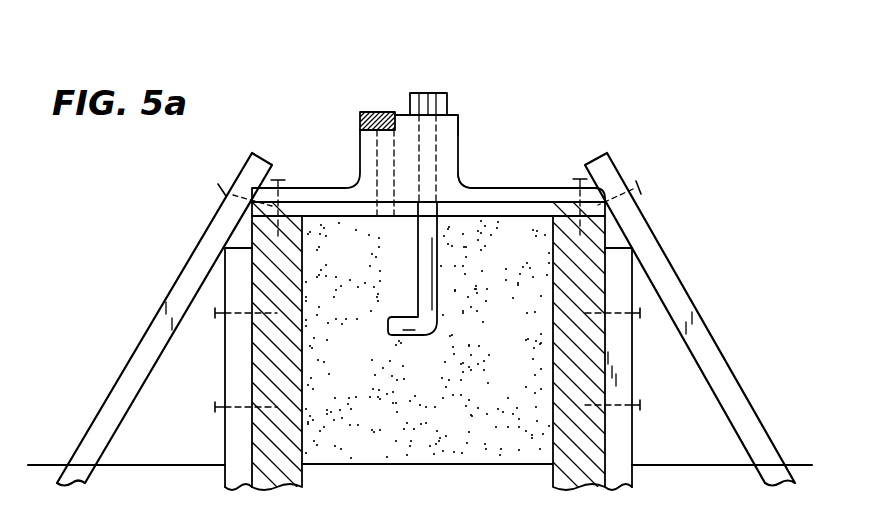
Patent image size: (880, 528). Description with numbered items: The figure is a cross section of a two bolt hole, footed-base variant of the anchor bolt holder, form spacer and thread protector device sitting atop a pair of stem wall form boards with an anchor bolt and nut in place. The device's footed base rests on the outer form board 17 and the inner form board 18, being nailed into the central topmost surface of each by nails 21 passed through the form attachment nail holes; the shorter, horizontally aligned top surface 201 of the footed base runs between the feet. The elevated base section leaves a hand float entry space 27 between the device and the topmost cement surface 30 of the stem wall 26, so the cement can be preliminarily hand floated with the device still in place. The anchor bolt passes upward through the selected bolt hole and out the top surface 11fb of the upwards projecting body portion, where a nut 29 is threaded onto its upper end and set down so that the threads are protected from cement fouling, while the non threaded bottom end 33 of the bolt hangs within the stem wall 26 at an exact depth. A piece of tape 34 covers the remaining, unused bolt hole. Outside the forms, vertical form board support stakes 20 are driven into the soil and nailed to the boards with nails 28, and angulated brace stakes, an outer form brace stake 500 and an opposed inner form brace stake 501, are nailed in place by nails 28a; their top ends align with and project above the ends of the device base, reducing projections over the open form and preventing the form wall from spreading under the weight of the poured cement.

The top surface 11fb is at (459, 111).
The outer form board 17 is at (283, 378).
The inner form board 18 is at (572, 375).
The vertical form board support stakes 20 is at (243, 383).
The nails 21 is at (279, 178).
The stem wall 26 is at (438, 394).
The hand float entry space 27 is at (463, 208).
The nails 28 is at (216, 408).
The nails 28a is at (233, 195).
The nut 29 is at (451, 94).
The topmost cement surface 30 is at (387, 222).
The non threaded bottom end 33 is at (444, 313).
The piece of tape 34 is at (381, 112).
The top surface 201 is at (485, 185).
The outer form brace stake 500 is at (188, 273).
The inner form brace stake 501 is at (667, 270).